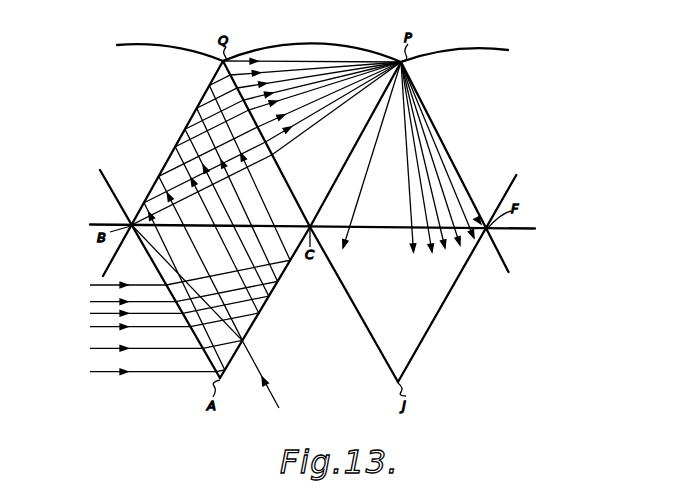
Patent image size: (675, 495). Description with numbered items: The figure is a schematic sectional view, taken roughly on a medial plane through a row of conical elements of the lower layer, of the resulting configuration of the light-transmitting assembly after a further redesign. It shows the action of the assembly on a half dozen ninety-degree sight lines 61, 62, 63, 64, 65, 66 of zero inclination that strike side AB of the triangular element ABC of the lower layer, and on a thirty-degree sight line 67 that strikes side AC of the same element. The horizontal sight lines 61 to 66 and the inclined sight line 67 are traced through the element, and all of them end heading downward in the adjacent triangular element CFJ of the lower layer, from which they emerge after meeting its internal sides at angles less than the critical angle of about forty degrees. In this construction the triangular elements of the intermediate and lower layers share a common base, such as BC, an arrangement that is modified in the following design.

The 90° sight line 61 is at (90, 285).
The 90° sight line 62 is at (90, 302).
The 90° sight line 63 is at (428, 244).
The 90° sight line 64 is at (90, 327).
The 90° sight line 65 is at (90, 348).
The 90° sight line 66 is at (92, 372).
The 30° sight line 67 is at (270, 389).